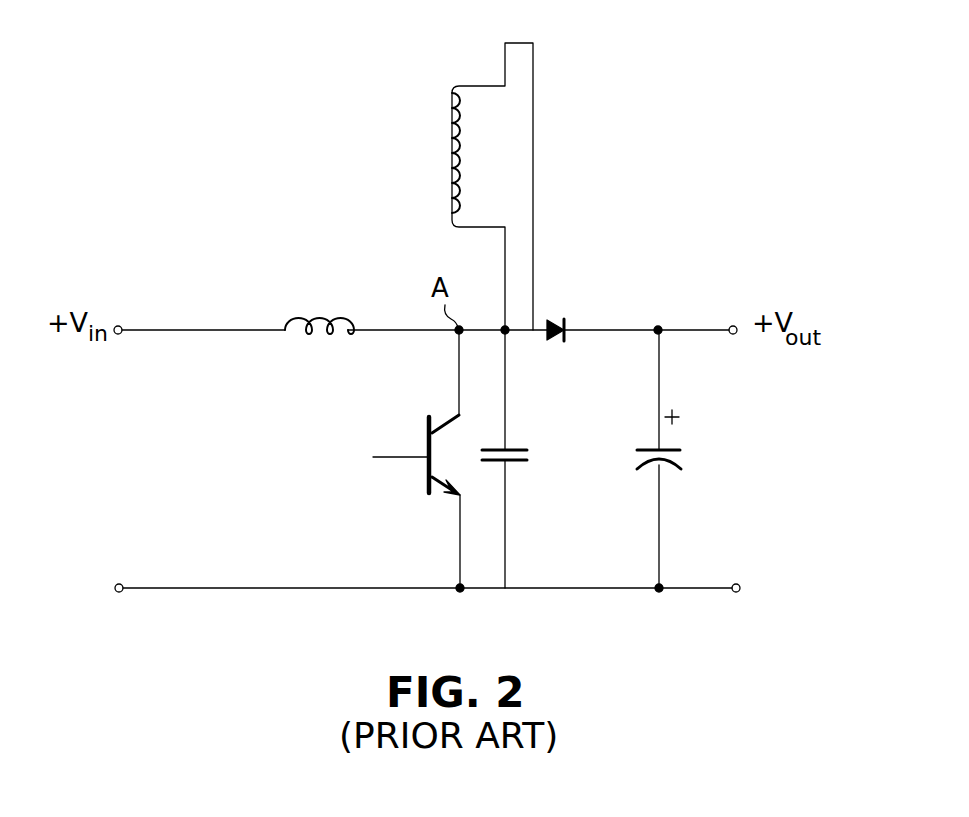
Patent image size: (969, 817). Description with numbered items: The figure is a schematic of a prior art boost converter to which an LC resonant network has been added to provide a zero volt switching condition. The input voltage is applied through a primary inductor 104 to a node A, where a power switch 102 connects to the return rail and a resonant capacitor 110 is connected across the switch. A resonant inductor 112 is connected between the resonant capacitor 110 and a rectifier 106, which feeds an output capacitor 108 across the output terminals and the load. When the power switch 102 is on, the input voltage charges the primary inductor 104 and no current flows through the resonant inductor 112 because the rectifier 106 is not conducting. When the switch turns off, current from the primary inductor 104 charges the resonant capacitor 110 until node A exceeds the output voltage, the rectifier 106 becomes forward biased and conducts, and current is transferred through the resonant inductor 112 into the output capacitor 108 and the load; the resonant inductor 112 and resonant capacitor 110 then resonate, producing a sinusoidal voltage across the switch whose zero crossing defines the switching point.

The power switch Q2 102 is at (447, 492).
The primary inductor L 104 is at (330, 318).
The rectifier D2 106 is at (555, 320).
The output capacitor C0 108 is at (678, 447).
The resonant capacitor Cres 110 is at (520, 445).
The resonant inductor Lres 112 is at (450, 165).